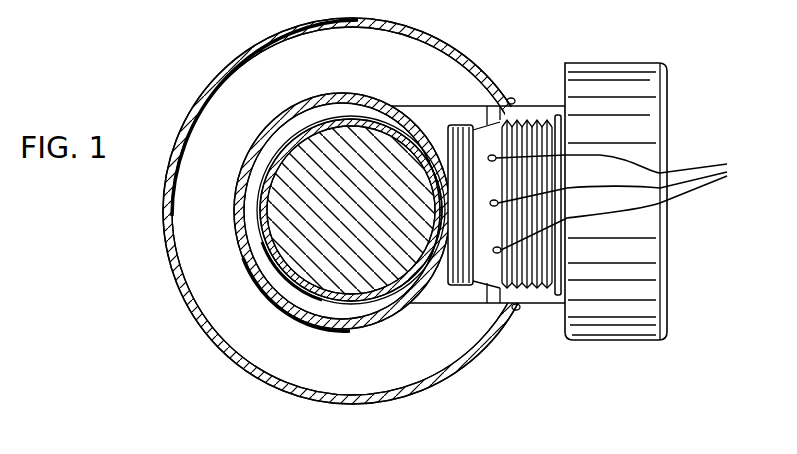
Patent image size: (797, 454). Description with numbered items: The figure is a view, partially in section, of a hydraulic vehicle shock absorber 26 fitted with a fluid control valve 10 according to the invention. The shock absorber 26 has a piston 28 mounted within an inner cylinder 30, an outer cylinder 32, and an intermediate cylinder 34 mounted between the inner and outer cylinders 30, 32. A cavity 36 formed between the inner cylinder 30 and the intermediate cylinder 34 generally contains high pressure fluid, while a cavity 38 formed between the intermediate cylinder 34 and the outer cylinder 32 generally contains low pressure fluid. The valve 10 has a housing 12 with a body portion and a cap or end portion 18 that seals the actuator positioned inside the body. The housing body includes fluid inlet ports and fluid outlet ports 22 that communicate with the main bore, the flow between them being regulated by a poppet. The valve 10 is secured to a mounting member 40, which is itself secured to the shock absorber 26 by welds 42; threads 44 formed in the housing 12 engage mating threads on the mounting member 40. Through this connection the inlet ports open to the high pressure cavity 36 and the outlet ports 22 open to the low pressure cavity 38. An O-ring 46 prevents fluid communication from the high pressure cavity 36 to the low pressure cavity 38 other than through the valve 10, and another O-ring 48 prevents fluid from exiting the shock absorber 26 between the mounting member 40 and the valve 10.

The fluid control valve 10 is at (646, 57).
The housing 12 is at (643, 107).
The cap or end portion 18 is at (670, 248).
The fluid outlet ports 22 is at (626, 204).
The vehicle shock absorber 26 is at (183, 101).
The piston 28 is at (353, 273).
The inner cylinder 30 is at (331, 122).
The outer cylinder 32 is at (175, 278).
The intermediate cylinder 34 is at (240, 222).
The cavity 36 is at (284, 124).
The cavity 38 is at (236, 169).
The mounting member 40 is at (463, 117).
The welds 42 is at (512, 99).
The threads 44 is at (543, 290).
The O-ring 46 is at (462, 284).
The O-ring 48 is at (557, 115).